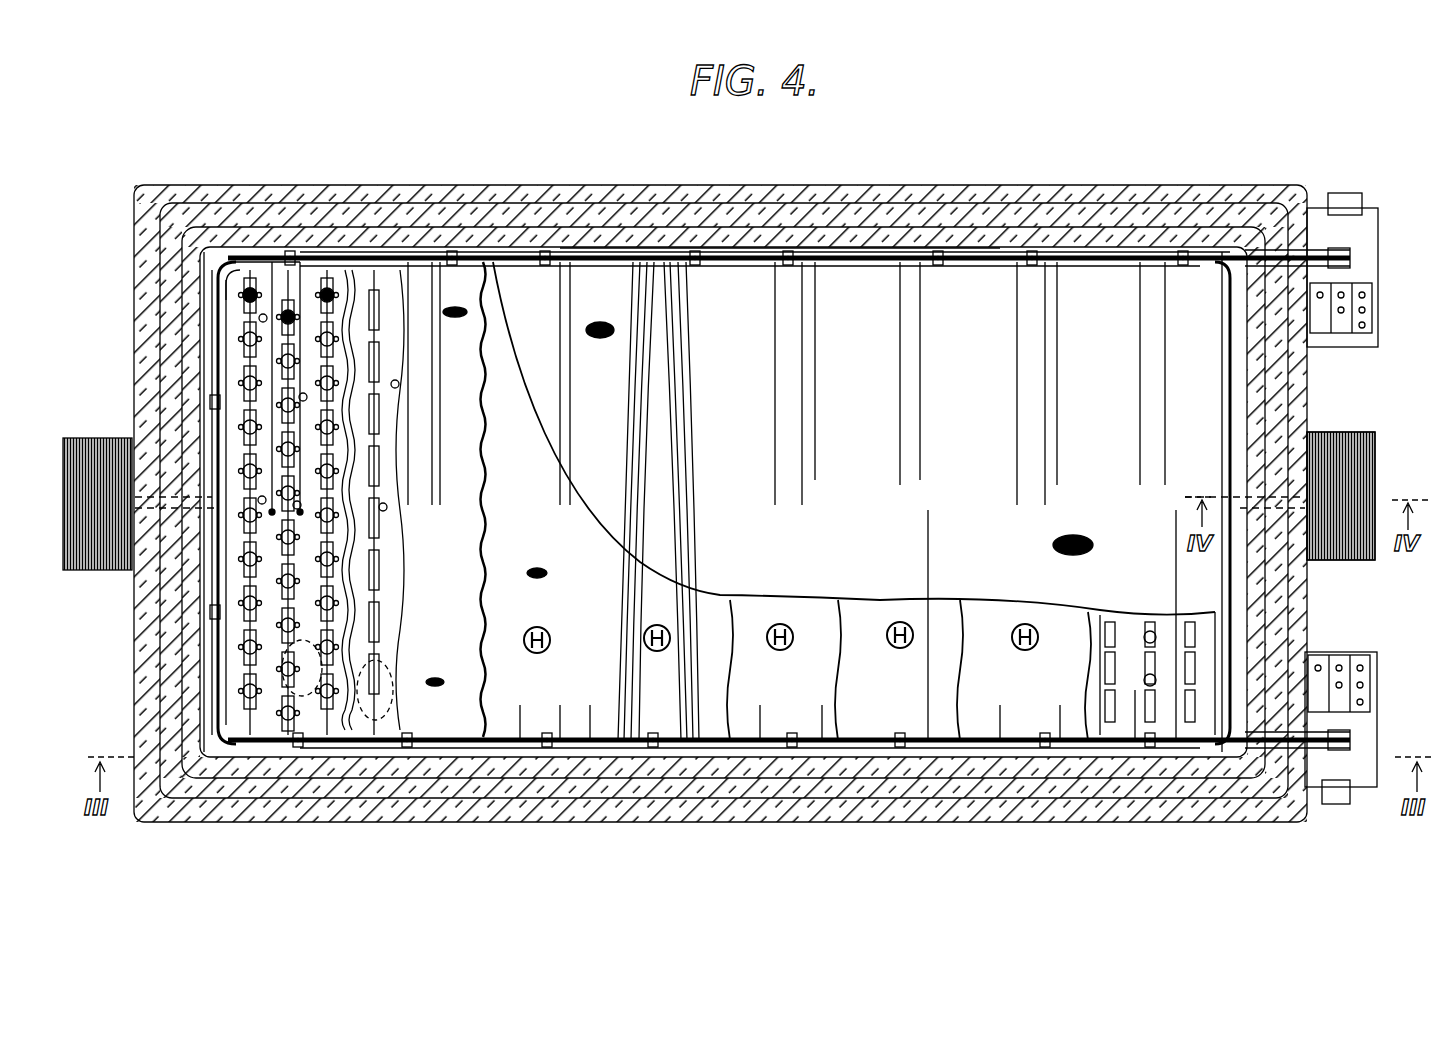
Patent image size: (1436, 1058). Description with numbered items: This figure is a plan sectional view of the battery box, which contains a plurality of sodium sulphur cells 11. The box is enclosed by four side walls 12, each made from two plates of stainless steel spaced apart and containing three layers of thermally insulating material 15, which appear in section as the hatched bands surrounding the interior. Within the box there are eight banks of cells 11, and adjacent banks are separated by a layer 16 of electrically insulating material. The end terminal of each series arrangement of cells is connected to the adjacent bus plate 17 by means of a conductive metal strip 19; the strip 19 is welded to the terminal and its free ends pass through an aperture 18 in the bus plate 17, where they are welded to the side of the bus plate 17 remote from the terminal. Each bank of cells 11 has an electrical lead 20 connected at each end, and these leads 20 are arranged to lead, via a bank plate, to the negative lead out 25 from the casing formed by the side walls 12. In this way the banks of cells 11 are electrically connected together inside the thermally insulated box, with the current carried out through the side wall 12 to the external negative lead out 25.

The sodium sulphur cells 11 is at (272, 752).
The side walls 12 is at (357, 186).
The thermally insulating material 15 is at (898, 236).
The layer of electrically insulating material 16 is at (343, 750).
The bus plate 17 is at (240, 585).
The aperture 18 is at (240, 296).
The conductive metal strip 19 is at (216, 275).
The electrical lead 20 is at (490, 268).
The negative lead out 25 is at (1330, 432).